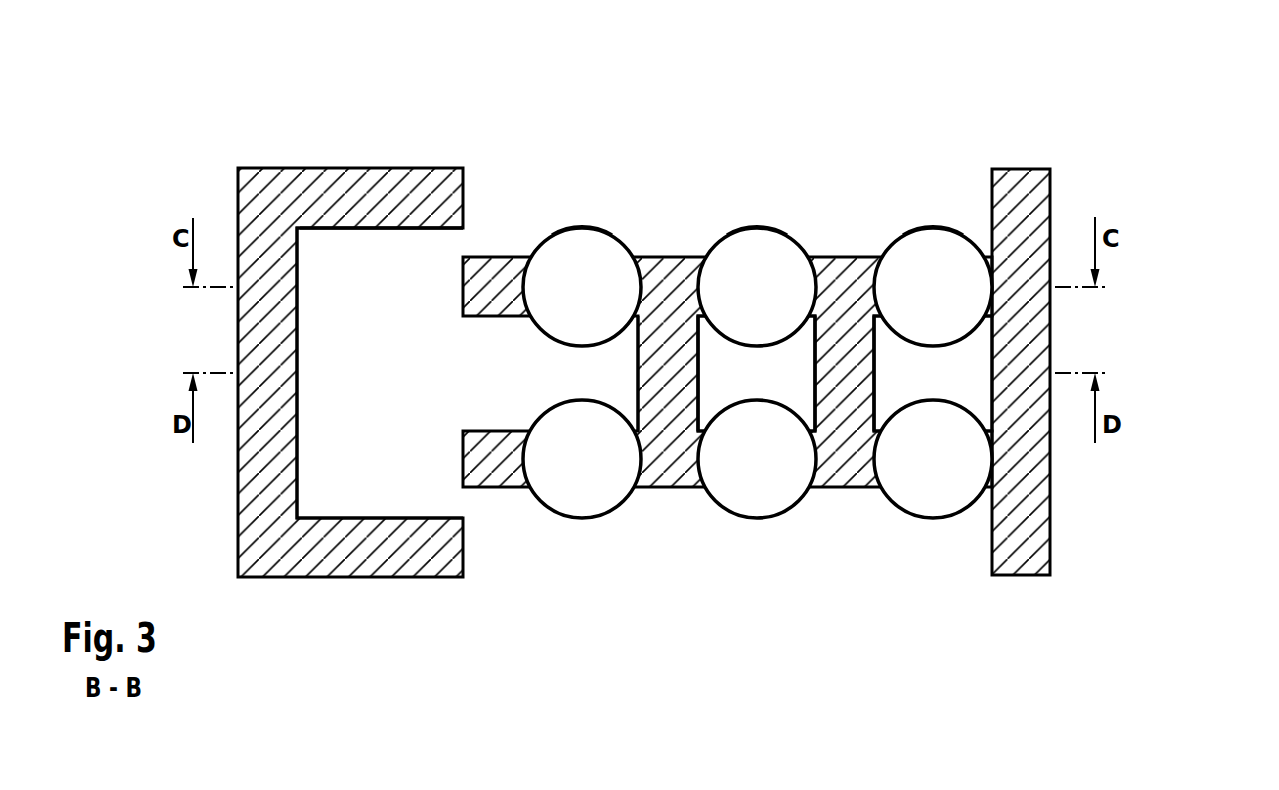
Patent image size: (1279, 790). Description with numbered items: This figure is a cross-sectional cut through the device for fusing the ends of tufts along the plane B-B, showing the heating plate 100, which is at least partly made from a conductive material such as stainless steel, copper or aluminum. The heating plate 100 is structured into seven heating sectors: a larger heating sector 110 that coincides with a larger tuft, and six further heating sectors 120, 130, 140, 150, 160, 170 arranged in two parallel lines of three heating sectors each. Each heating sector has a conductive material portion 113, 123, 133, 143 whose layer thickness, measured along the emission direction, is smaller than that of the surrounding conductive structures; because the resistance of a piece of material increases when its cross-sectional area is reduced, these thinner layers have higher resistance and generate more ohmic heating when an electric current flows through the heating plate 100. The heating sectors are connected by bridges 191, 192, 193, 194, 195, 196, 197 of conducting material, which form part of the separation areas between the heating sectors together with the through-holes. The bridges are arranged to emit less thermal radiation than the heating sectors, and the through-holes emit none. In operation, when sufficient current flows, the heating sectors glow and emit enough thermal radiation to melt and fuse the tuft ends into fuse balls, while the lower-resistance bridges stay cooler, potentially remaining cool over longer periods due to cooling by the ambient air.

The heating plate 100 is at (1165, 132).
The heating sector 110 is at (356, 242).
The conductive material portion 113 is at (417, 248).
The heating sector 120 is at (586, 200).
The conductive material portion 123 is at (560, 250).
The heating sector 130 is at (763, 200).
The conductive material portion 133 is at (735, 250).
The heating sector 140 is at (938, 200).
The conductive material portion 143 is at (912, 250).
The heating sector 150 is at (587, 548).
The heating sector 160 is at (762, 548).
The heating sector 170 is at (939, 548).
The bridge 191 is at (262, 340).
The bridge 192 is at (496, 275).
The bridge 193 is at (669, 275).
The bridge 194 is at (848, 275).
The bridge 195 is at (1028, 339).
The bridge 196 is at (673, 370).
The bridge 197 is at (850, 370).